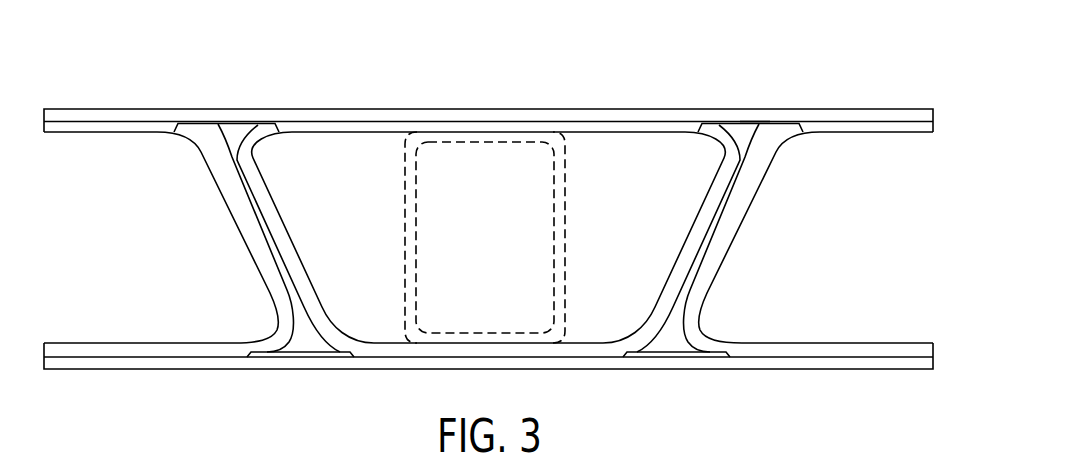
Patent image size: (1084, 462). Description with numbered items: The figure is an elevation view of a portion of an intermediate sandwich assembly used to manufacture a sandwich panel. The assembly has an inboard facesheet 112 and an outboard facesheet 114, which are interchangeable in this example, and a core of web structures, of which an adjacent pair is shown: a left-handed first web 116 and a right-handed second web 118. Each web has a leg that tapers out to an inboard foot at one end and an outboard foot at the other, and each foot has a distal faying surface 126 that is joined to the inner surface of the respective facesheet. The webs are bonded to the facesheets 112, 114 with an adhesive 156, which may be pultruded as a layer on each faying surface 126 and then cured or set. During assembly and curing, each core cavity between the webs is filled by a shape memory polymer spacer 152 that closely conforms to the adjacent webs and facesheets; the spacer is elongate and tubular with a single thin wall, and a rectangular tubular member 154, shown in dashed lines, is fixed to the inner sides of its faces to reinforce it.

The inboard facesheet 112 is at (903, 362).
The outboard facesheet 114 is at (913, 117).
The first web 116 is at (280, 268).
The second web 118 is at (690, 291).
The faying surface 126 is at (757, 110).
The shape memory polymer spacer 152 is at (488, 238).
The rectangular tubular member 154 is at (565, 190).
The adhesive 156 is at (247, 124).